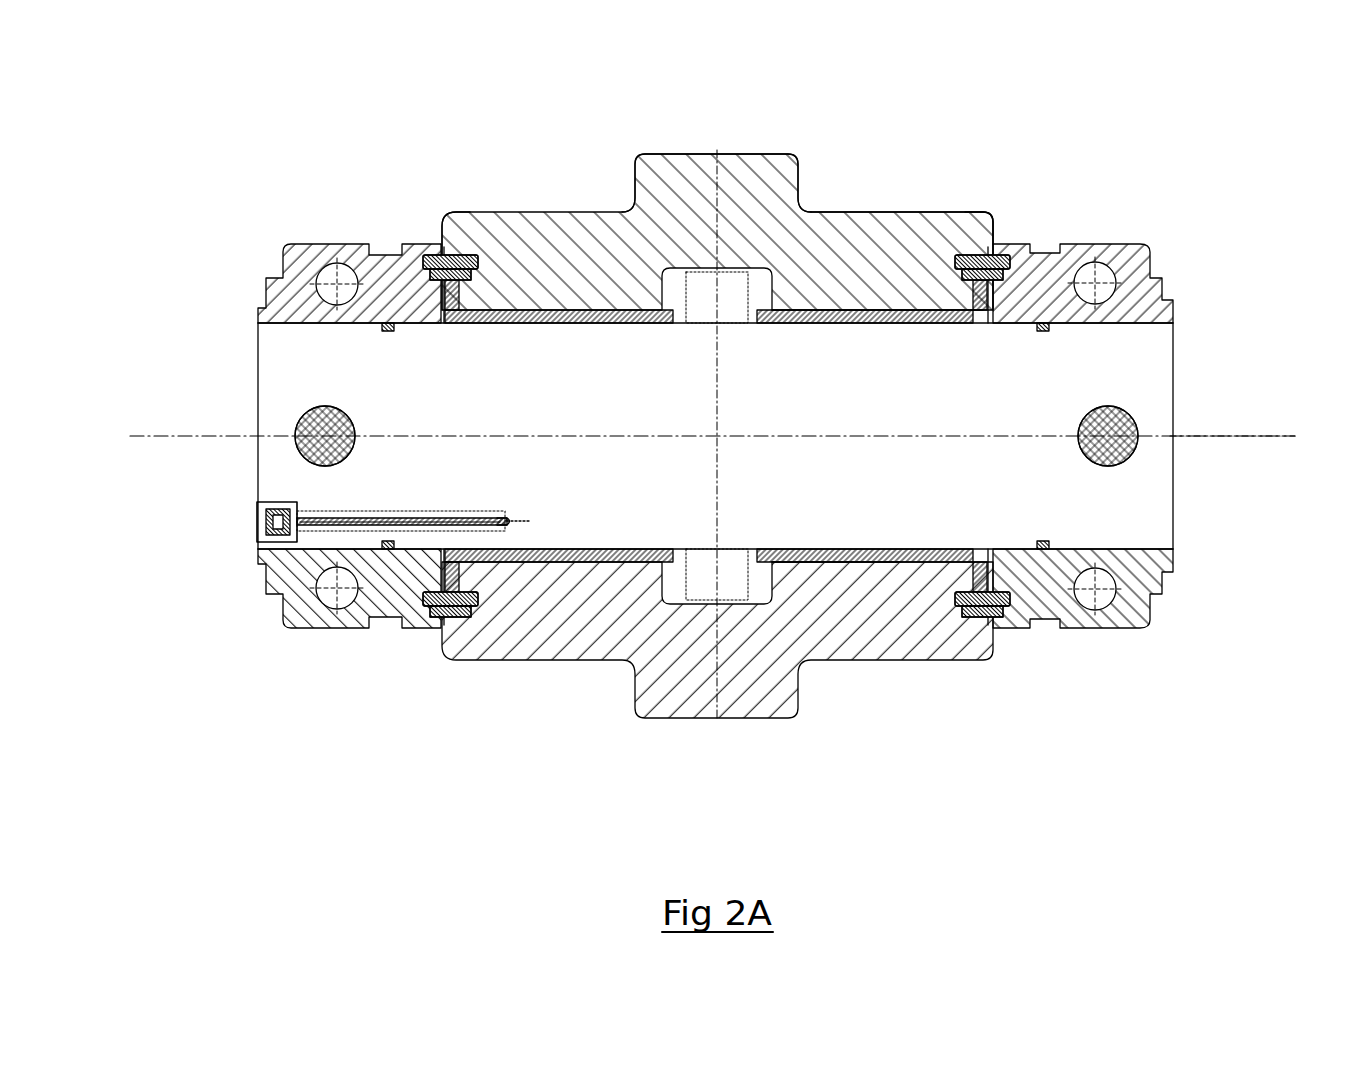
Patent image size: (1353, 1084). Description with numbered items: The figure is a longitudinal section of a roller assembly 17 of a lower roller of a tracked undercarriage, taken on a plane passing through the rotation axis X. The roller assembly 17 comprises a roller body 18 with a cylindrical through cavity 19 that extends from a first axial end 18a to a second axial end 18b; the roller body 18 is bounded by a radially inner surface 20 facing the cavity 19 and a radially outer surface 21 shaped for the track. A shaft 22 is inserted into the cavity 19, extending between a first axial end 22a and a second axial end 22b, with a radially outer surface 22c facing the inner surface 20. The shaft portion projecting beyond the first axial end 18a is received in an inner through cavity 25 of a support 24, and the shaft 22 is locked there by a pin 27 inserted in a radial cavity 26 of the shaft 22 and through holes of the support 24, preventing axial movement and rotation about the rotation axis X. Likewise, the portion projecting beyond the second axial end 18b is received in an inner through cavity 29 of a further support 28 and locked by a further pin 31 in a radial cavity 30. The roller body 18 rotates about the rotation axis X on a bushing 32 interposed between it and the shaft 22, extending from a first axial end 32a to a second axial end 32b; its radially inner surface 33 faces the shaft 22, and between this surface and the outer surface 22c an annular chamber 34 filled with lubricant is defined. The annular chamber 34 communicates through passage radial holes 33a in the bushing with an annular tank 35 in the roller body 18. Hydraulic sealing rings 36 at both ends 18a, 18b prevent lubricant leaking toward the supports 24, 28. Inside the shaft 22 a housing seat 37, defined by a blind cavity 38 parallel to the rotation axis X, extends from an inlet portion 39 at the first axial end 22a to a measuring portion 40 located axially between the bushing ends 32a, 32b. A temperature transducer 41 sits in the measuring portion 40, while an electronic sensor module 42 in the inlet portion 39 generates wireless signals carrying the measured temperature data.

The roller assembly 17 is at (1200, 242).
The roller body 18 is at (863, 227).
The first axial end 18a is at (440, 257).
The second axial end 18b is at (993, 217).
The cylindrical through cavity 19 is at (878, 313).
The radially inner surface 20 is at (600, 300).
The radially outer surface 21 is at (658, 155).
The shaft 22 is at (578, 365).
The first axial end 22a is at (262, 410).
The second axial end 22b is at (1175, 388).
The radially outer surface 22c is at (702, 528).
The support 24 is at (297, 258).
The inner through cavity 25 is at (322, 332).
The radial cavity 26 is at (312, 407).
The pin 27 is at (315, 422).
The further support 28 is at (1140, 610).
The inner through cavity 29 is at (1145, 323).
The radial cavity 30 is at (1105, 445).
The further pin 31 is at (1118, 468).
The bushing 32 is at (603, 562).
The first axial end 32a is at (440, 307).
The second axial end 32b is at (990, 305).
The radially inner surface 33 is at (940, 537).
The passage radial holes 33a is at (752, 550).
The annular chamber 34 is at (798, 540).
The tank 35 is at (755, 287).
The hydraulic sealing rings 36 is at (433, 253).
The housing seat 37 is at (357, 540).
The blind cavity 38 is at (420, 525).
The inlet portion 39 is at (262, 503).
The measuring portion 40 is at (487, 525).
The temperature transducer 41 is at (507, 525).
The electronic sensor module 42 is at (264, 542).
The rotation axis X is at (1263, 433).